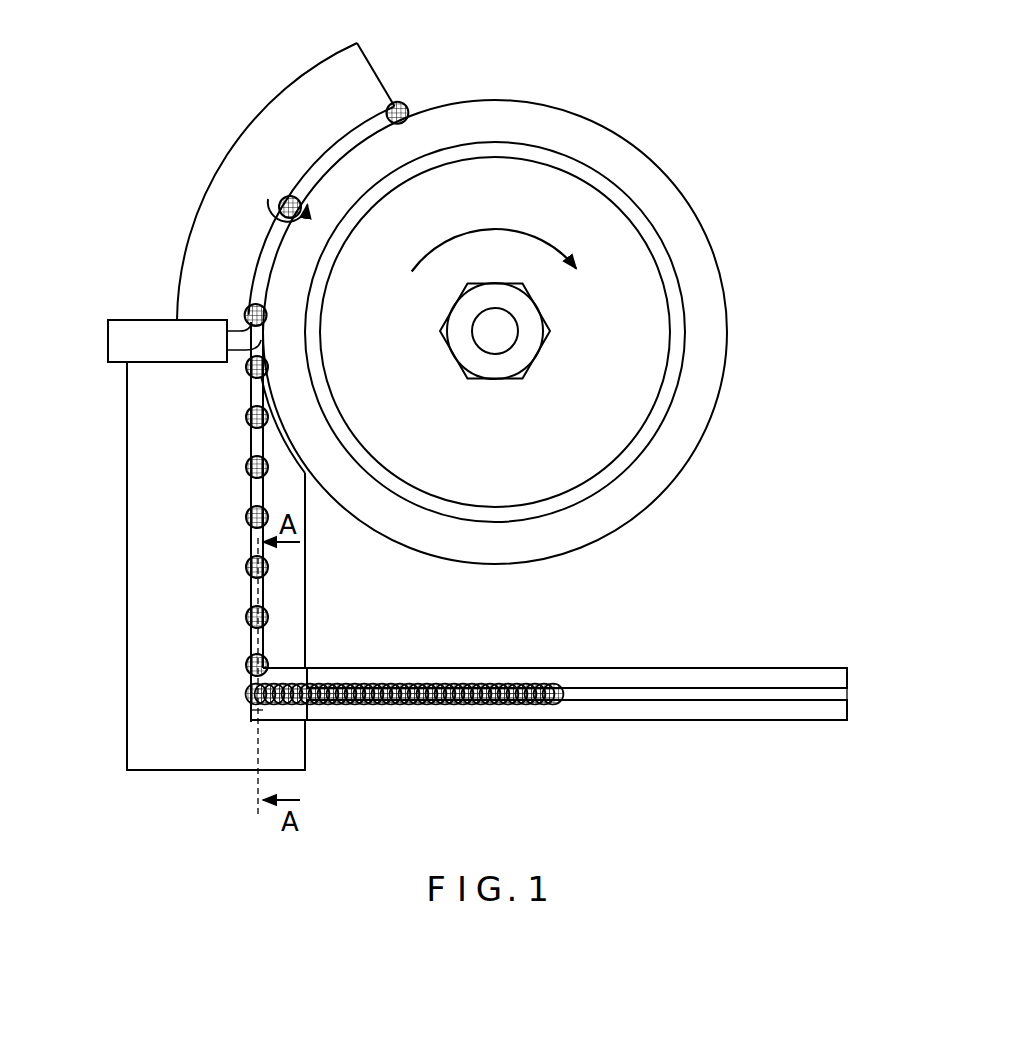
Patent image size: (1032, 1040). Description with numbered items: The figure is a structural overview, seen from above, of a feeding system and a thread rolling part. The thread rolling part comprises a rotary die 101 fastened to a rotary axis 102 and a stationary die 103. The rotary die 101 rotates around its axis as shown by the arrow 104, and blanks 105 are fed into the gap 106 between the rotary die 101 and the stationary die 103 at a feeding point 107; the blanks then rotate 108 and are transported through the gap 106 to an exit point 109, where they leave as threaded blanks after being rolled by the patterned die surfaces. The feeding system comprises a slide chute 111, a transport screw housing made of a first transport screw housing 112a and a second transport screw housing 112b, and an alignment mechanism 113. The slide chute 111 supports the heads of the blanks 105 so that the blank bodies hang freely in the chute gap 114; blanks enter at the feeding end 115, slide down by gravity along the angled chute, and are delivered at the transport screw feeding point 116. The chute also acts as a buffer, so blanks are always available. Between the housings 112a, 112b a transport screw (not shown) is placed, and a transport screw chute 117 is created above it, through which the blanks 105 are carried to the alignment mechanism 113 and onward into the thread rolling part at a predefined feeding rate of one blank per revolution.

The rotary die 101 is at (600, 147).
The shaft 102 is at (526, 344).
The stationary die 103 is at (287, 133).
The arrow 104 is at (592, 268).
The blanks 105 is at (243, 307).
The gap 106 is at (268, 247).
The feeding point 107 is at (236, 321).
The rotation of the blanks 108 is at (261, 203).
The exit point 109 is at (422, 102).
The slide chute 111 is at (481, 683).
The first transport screw housing 112a is at (175, 611).
The second transport screw housing 112b is at (285, 619).
The alignment mechanism 113 is at (222, 346).
The chute gap 114 is at (718, 693).
The feeding end 115 is at (853, 690).
The transport screw feeding point 116 is at (247, 716).
The transport screw chute 117 is at (253, 493).